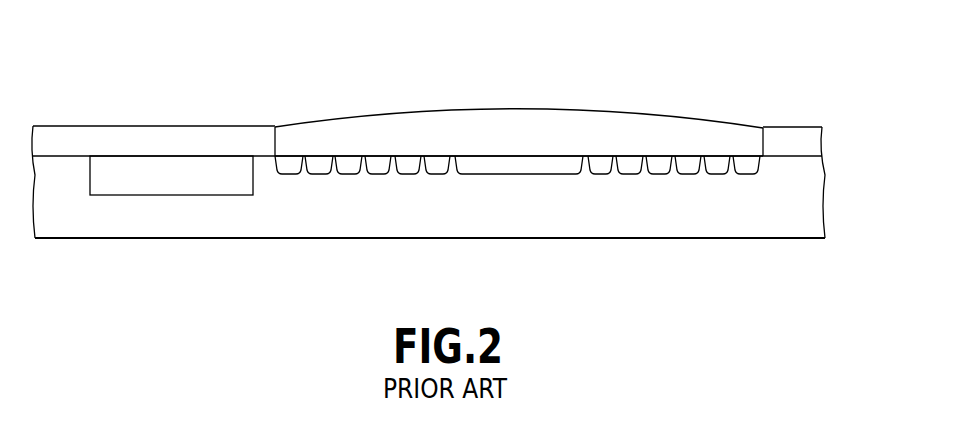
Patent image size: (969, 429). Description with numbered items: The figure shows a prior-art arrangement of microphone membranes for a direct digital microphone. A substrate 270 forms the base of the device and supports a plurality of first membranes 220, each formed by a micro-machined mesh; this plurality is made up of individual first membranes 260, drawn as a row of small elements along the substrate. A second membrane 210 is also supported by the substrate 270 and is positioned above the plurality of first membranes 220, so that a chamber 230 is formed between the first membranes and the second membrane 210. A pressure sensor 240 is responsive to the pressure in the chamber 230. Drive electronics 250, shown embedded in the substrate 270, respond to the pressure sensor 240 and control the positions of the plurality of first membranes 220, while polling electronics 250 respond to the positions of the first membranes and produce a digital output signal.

The second membrane 210 is at (590, 112).
The plurality of first membranes 220 is at (572, 193).
The chamber 230 is at (433, 127).
The pressure sensor 240 is at (502, 163).
The drive electronics 250 is at (165, 181).
The individual first membranes 260 is at (320, 167).
The substrate 270 is at (668, 223).